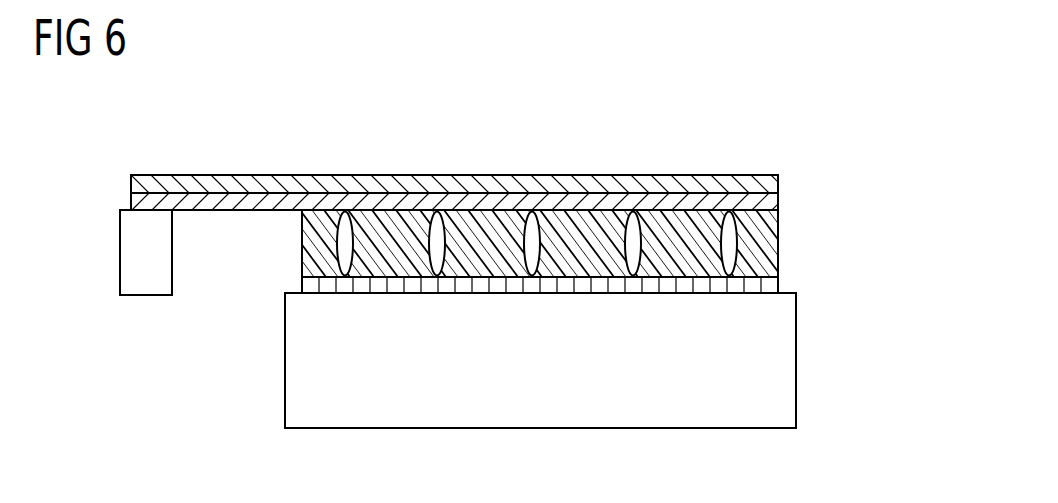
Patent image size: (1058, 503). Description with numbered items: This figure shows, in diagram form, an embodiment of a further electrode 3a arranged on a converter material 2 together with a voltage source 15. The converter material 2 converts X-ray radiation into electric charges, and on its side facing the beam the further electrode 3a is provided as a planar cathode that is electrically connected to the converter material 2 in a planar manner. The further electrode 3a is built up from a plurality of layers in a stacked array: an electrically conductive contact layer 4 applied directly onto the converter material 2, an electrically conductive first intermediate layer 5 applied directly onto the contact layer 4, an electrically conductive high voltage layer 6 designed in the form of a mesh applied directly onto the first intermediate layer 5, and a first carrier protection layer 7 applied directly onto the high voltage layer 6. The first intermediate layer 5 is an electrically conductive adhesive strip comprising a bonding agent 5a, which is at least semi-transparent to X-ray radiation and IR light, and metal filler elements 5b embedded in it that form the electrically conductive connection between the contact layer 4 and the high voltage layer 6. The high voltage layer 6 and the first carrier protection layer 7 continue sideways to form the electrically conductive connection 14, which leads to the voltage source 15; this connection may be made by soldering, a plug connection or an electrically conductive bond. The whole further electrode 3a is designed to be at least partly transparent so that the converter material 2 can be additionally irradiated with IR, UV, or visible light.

The converter material 2 is at (782, 362).
The further electrode 3a is at (518, 200).
The contact layer 4 is at (778, 287).
The first intermediate layer 5 is at (544, 194).
The bonding agent 5a is at (488, 225).
The filler element 5b is at (437, 224).
The high voltage layer 6 is at (778, 202).
The first carrier protection layer 7 is at (780, 185).
The electrically conductive connection 14 is at (474, 158).
The voltage source 15 is at (133, 258).